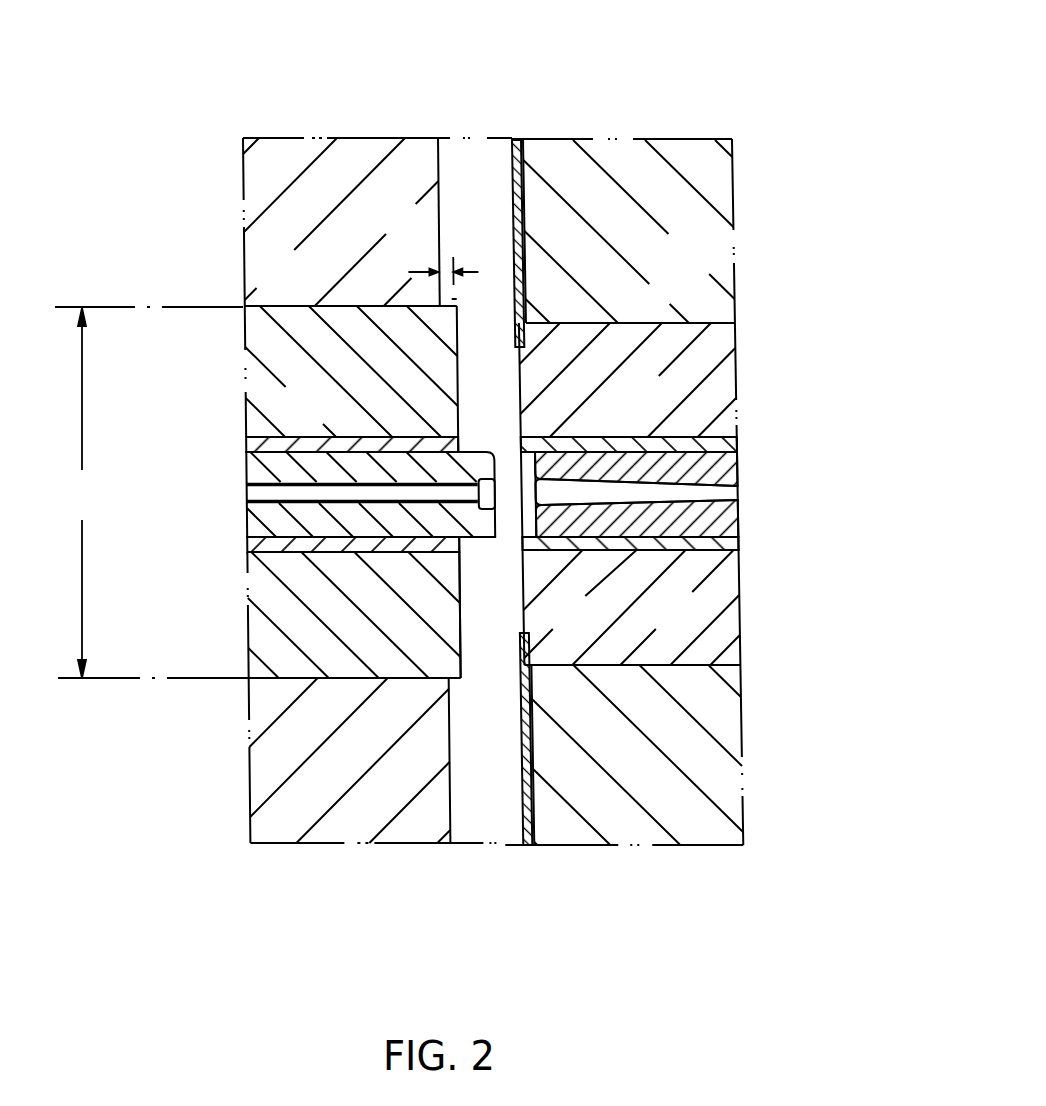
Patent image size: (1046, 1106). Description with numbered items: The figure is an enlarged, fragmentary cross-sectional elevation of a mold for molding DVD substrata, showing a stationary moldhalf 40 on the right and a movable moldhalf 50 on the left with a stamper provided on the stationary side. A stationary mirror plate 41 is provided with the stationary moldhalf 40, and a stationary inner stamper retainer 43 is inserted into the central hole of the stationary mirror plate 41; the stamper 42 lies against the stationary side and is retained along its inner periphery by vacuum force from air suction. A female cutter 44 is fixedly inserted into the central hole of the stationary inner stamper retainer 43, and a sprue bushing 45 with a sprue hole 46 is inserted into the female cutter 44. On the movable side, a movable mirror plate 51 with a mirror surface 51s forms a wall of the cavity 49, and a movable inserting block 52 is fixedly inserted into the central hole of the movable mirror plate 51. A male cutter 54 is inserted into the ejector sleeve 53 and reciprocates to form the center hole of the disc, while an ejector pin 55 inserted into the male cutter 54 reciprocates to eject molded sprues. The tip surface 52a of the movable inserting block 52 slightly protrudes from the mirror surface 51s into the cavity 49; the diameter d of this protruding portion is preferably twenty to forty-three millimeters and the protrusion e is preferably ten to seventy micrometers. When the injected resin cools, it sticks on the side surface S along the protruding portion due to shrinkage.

The stationary moldhalf 40 is at (696, 442).
The stationary mirror plate 41 is at (697, 296).
The stamper 42 is at (513, 140).
The stationary inner stamper retainer 43 is at (640, 427).
The female cutter 44 is at (725, 443).
The sprue bushing 45 is at (569, 537).
The sprue hole 46 is at (651, 492).
The cavity 49 is at (494, 226).
The movable moldhalf 50 is at (301, 483).
The movable mirror plate 51 is at (308, 295).
The mirror surface 51s is at (445, 138).
The movable inserting block 52 is at (311, 421).
The tip surface 52a is at (458, 633).
The ejector sleeve 53 is at (243, 444).
The male cutter 54 is at (247, 468).
The ejector pin 55 is at (242, 497).
The diameter of the protruding portion d is at (151, 492).
The protruding e is at (441, 268).
The side surface S is at (450, 299).